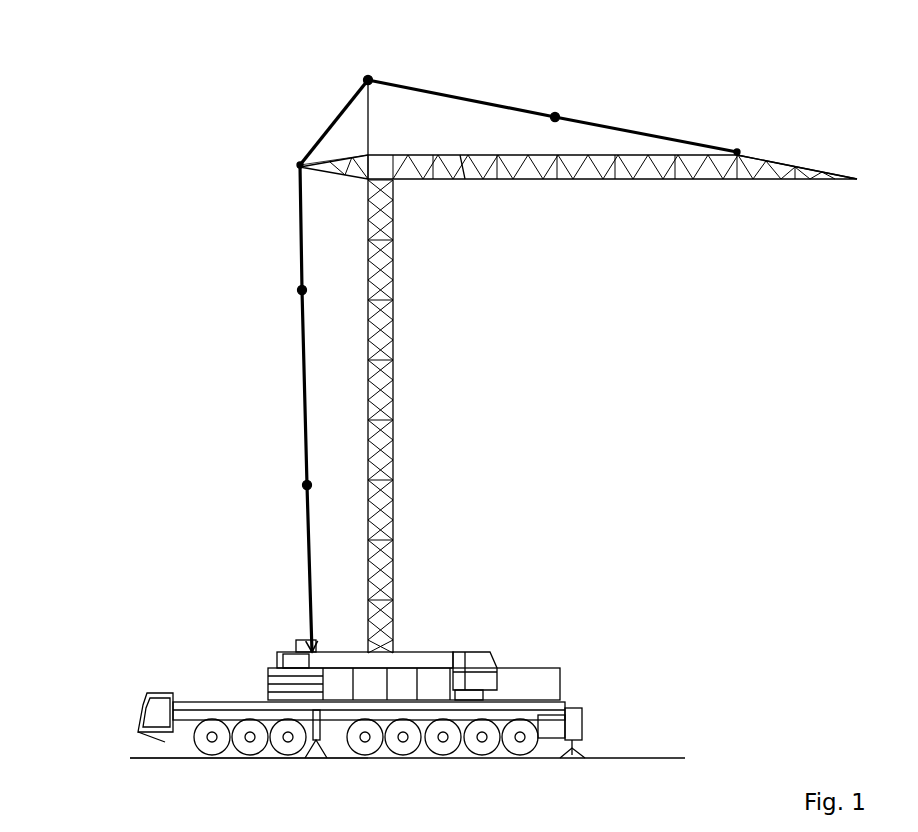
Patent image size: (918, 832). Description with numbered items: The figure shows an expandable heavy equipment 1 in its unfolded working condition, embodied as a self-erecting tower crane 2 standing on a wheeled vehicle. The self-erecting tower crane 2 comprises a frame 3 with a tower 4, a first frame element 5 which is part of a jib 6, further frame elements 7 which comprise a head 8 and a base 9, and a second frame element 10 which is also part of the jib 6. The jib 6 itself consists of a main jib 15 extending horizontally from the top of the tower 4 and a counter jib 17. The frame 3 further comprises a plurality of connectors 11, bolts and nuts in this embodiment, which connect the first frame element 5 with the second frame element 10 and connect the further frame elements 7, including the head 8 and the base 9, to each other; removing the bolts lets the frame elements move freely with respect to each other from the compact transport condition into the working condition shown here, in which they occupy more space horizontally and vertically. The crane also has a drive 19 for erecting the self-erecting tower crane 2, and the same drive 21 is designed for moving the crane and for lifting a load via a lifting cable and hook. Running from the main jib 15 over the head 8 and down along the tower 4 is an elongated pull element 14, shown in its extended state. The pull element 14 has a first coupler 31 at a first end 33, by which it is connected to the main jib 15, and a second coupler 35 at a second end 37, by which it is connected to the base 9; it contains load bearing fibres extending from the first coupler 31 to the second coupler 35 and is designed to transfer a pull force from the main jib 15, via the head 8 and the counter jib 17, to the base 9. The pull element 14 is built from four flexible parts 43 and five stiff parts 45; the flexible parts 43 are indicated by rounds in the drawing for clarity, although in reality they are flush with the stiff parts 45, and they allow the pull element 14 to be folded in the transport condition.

The expandable heavy equipment 1 is at (197, 393).
The self-erecting tower crane 2 is at (148, 145).
The frame 3 is at (210, 138).
The tower 4 is at (345, 355).
The first frame element 5 is at (693, 162).
The jib 6 is at (535, 100).
The further frame elements 7 is at (357, 657).
The head 8 is at (367, 79).
The base 9 is at (300, 653).
The second frame element 10 is at (465, 165).
The connectors 11 is at (395, 665).
The elongated pull element 14 is at (295, 147).
The main jib 15 is at (713, 118).
The counter jib 17 is at (310, 148).
The drive 19 is at (197, 553).
The drive 21 is at (310, 563).
The first coupler 31 is at (789, 95).
The first end 33 is at (737, 152).
The second coupler 35 is at (224, 590).
The second end 37 is at (310, 655).
The flexible parts 43 is at (555, 117).
The stiff parts 45 is at (330, 153).